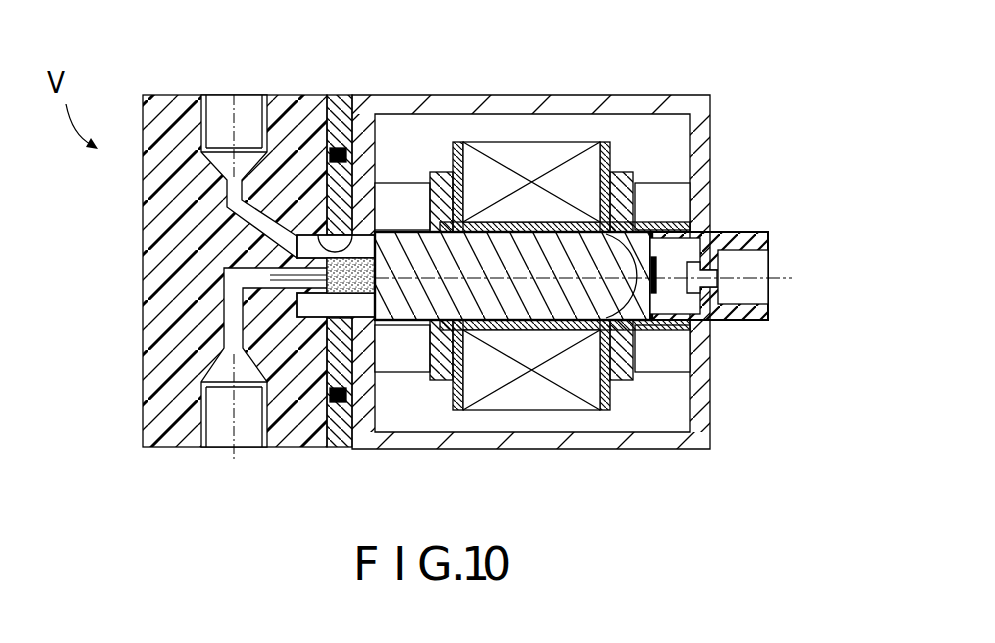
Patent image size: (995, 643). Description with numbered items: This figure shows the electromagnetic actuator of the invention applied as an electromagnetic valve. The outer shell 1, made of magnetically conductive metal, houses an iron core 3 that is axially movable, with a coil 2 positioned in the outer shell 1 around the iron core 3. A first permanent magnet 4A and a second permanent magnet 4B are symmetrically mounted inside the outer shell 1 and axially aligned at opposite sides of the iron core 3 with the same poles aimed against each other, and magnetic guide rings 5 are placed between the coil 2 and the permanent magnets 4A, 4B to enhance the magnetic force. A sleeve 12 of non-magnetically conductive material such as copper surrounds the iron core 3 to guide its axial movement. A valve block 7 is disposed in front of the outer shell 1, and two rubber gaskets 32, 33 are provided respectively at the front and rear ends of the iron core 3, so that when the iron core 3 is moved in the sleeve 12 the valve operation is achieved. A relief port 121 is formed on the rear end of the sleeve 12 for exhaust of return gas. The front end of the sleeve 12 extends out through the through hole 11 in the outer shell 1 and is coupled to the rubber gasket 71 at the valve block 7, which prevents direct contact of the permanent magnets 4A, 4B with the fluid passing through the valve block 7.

The outer shell 1 is at (390, 86).
The coil 2 is at (530, 150).
The iron core 3 is at (572, 248).
The first permanent magnet 4A is at (400, 184).
The second permanent magnet 4B is at (660, 182).
The magnetic guide rings 5 is at (619, 165).
The valve block 7 is at (158, 247).
The through hole 11 is at (318, 235).
The sleeve 12 is at (655, 312).
The rubber gasket 32 is at (352, 295).
The rubber gasket 33 is at (700, 320).
The rubber gasket 71 is at (344, 97).
The relief port 121 is at (722, 322).